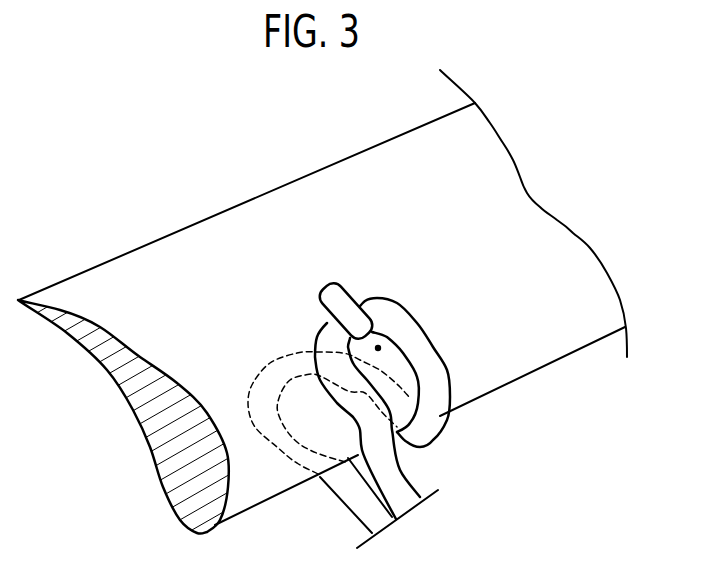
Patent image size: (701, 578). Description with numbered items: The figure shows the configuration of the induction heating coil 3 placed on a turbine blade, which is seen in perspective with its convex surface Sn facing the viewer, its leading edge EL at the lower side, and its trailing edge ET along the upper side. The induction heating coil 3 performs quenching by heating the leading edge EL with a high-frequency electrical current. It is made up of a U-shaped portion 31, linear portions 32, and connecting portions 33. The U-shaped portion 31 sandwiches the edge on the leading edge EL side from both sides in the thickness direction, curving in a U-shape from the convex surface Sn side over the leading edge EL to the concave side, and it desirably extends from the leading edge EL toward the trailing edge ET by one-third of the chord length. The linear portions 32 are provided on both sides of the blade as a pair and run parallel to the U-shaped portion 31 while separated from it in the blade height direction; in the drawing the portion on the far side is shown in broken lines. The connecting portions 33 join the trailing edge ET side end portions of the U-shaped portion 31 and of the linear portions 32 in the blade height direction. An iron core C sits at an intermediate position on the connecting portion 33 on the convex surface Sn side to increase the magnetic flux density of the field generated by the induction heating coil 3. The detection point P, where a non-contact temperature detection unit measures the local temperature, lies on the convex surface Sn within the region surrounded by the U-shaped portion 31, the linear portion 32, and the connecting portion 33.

The induction heating coil 3 is at (395, 381).
The U-shaped portion 31 is at (438, 421).
The linear portions 32 is at (348, 391).
The connecting portions 33 is at (327, 323).
The iron core C is at (332, 288).
The detection point P is at (380, 348).
The convex surface Sn is at (205, 233).
The trailing edge ET is at (337, 163).
The leading edge EL is at (557, 358).